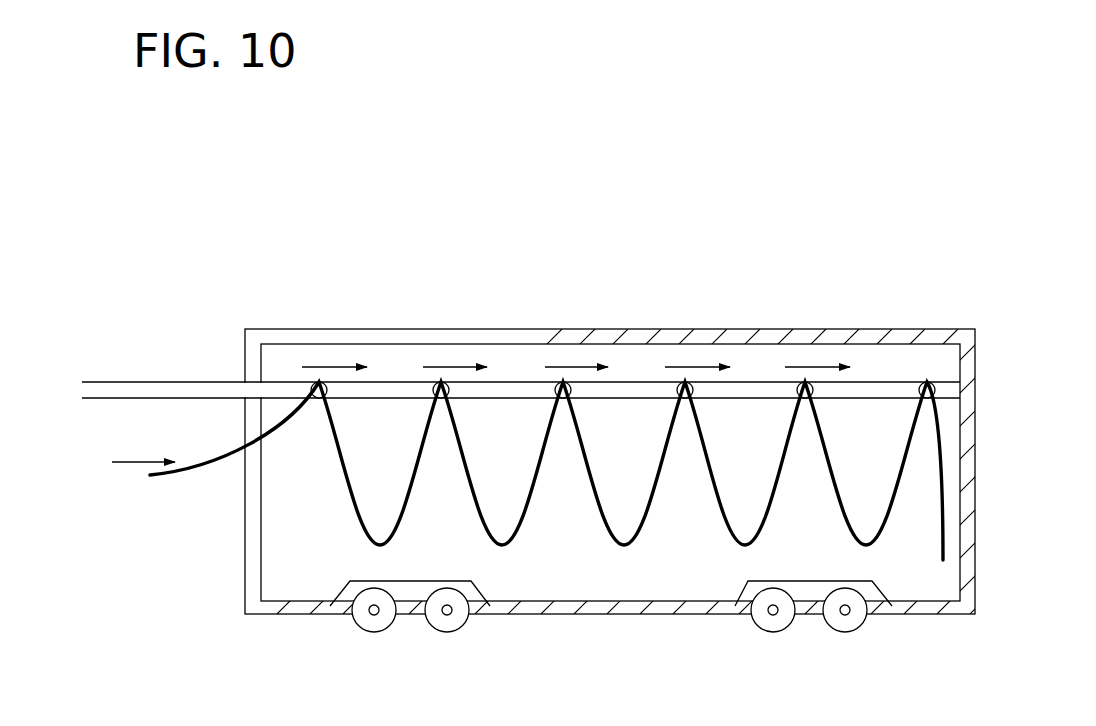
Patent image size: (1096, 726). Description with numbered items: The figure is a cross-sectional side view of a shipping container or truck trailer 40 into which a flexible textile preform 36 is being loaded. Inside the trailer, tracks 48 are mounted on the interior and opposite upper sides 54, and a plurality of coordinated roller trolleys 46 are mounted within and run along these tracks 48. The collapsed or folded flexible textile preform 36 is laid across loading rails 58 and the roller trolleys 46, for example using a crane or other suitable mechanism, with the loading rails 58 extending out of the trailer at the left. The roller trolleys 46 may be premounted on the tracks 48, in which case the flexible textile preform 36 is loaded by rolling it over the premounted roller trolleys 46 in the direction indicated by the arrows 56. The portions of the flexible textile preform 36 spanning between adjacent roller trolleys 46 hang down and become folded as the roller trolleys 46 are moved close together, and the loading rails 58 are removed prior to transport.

The flexible textile preform 36 is at (633, 538).
The truck trailer 40 is at (352, 324).
The roller trolleys 46 is at (788, 378).
The tracks 48 is at (288, 387).
The interior and opposite upper sides 54 is at (398, 369).
The arrows 56 is at (813, 368).
The loading rails 58 is at (152, 382).